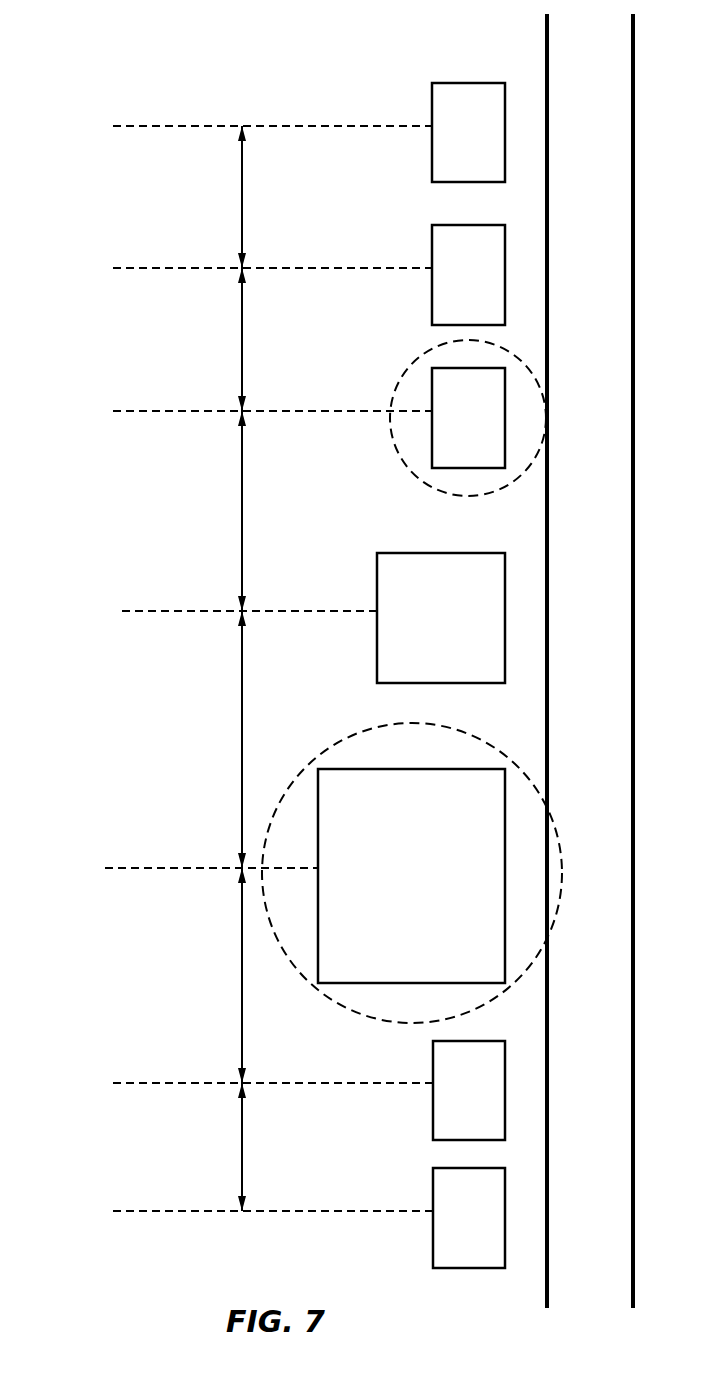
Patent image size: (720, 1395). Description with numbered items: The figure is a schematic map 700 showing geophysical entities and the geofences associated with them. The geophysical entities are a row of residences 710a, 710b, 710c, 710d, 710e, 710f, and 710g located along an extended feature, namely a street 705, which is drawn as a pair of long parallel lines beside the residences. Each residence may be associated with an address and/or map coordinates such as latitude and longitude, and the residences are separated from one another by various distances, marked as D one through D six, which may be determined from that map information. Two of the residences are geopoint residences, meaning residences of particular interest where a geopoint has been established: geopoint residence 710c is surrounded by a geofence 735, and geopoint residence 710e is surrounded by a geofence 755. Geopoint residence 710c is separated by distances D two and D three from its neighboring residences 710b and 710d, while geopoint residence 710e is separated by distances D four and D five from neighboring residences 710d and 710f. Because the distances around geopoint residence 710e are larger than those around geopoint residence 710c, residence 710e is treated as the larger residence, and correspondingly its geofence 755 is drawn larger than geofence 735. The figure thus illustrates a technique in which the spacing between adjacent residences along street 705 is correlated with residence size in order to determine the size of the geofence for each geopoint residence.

The sensor arrangement 700 is at (94, 60).
The street 705 is at (634, 177).
The residence 710a is at (470, 83).
The residence 710b is at (468, 225).
The geopoint residence 710c is at (443, 368).
The residence 710d is at (423, 553).
The geopoint residence 710e is at (402, 769).
The residence 710f is at (433, 1118).
The residence 710g is at (433, 1246).
The geofence 735 is at (460, 497).
The geofence 755 is at (460, 732).